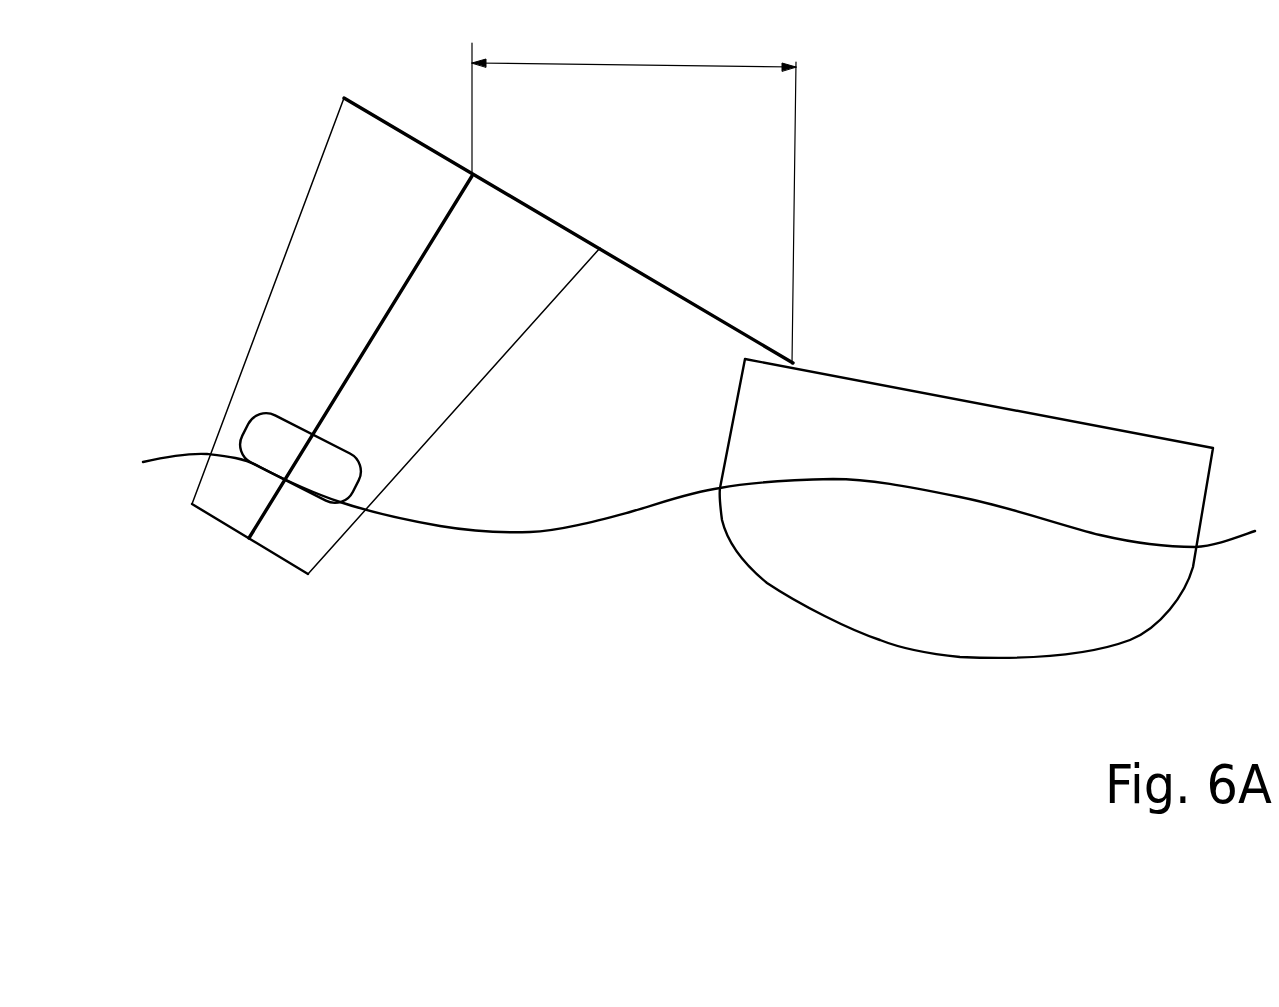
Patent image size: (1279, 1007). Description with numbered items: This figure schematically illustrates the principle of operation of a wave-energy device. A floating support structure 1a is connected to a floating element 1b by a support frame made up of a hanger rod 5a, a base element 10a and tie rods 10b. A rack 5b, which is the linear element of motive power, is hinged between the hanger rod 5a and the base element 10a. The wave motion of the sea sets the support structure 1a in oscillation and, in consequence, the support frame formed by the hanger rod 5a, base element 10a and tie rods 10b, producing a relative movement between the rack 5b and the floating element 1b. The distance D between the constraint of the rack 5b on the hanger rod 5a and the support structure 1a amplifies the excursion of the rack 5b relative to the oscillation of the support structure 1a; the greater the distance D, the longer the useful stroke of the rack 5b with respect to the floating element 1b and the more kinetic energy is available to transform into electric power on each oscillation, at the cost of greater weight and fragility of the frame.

The support structure 1a is at (957, 440).
The floating element 1b is at (265, 447).
The hanger rod 5a is at (677, 300).
The rack 5b is at (402, 288).
The base element 10a is at (277, 558).
The tie rods 10b is at (292, 236).
The distance D is at (634, 192).